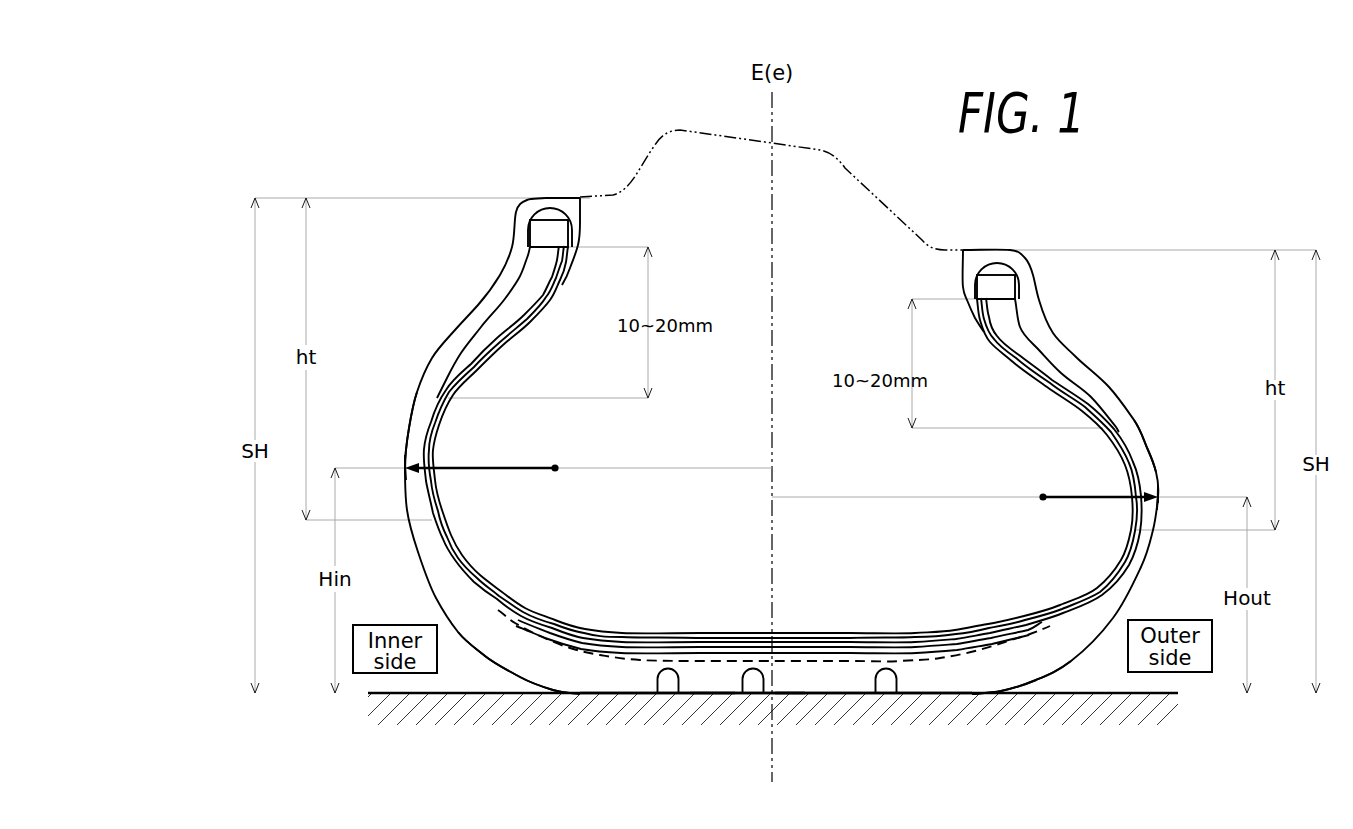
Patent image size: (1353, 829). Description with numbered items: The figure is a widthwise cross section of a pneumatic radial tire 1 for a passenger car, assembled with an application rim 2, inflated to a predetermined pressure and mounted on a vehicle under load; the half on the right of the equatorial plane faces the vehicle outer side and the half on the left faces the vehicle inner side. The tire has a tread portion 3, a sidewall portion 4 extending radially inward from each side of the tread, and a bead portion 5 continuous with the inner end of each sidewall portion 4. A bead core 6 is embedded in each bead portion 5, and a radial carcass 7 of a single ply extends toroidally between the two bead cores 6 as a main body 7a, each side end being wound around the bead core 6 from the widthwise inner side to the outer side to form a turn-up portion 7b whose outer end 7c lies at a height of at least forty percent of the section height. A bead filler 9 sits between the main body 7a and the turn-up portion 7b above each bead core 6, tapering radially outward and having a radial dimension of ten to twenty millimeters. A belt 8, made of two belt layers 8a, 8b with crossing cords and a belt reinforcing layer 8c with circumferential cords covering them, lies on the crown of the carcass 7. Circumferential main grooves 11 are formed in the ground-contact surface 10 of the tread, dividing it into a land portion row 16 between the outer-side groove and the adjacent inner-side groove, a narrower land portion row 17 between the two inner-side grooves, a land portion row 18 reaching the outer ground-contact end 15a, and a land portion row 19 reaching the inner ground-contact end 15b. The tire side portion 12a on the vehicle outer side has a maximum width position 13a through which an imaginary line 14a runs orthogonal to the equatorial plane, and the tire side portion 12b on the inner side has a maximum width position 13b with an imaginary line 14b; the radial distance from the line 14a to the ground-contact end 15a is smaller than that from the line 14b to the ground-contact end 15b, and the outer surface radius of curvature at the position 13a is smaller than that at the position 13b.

The pneumatic radial tire 1 is at (1151, 392).
The application rim 2 is at (850, 173).
The tread portion 3 is at (736, 727).
The sidewall portion 4 is at (1164, 486).
The bead portion 5 is at (1043, 300).
The bead core 6 is at (994, 287).
The radial carcass 7 is at (833, 632).
The main body 7a is at (743, 633).
The turn-up portion 7b is at (1092, 400).
The outer end 7c is at (1137, 536).
The belt 8 is at (774, 674).
The belt layer 8a is at (637, 642).
The belt layer 8b is at (675, 651).
The belt reinforcing layer 8c is at (699, 659).
The bead filler 9 is at (1000, 324).
The ground-contact surface 10 is at (833, 694).
The circumferential main groove 11 is at (887, 688).
The tire side portion 12a is at (1145, 446).
The tire side portion 12b is at (407, 431).
The maximum width position 13a is at (1159, 498).
The maximum width position 13b is at (406, 469).
The imaginary line 14a is at (847, 497).
The imaginary line 14b is at (666, 468).
The ground-contact end 15a is at (975, 695).
The ground-contact end 15b is at (570, 695).
The land portion row 16 is at (789, 691).
The land portion row 17 is at (710, 694).
The land portion row 18 is at (973, 678).
The land portion row 19 is at (578, 678).